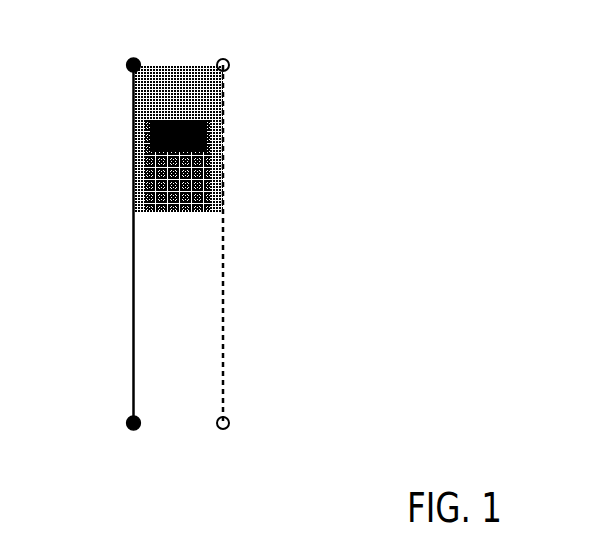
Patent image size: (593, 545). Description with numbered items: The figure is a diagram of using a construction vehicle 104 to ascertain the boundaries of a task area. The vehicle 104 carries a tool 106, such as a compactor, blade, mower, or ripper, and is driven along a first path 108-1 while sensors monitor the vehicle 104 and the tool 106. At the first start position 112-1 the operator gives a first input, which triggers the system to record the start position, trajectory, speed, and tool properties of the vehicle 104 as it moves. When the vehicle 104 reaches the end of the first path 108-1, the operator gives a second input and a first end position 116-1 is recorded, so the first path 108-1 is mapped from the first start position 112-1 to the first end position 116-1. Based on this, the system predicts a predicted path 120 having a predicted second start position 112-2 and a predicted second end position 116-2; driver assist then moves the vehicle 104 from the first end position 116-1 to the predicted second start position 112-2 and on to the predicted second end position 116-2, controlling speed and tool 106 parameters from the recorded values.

The vehicle 104 is at (162, 207).
The tool 106 is at (162, 77).
The first path 108-1 is at (131, 170).
The first start position 112-1 is at (128, 426).
The predicted second start position 112-2 is at (219, 429).
The first end position 116-1 is at (127, 67).
The predicted second end position 116-2 is at (228, 60).
The predicted path 120 is at (224, 333).